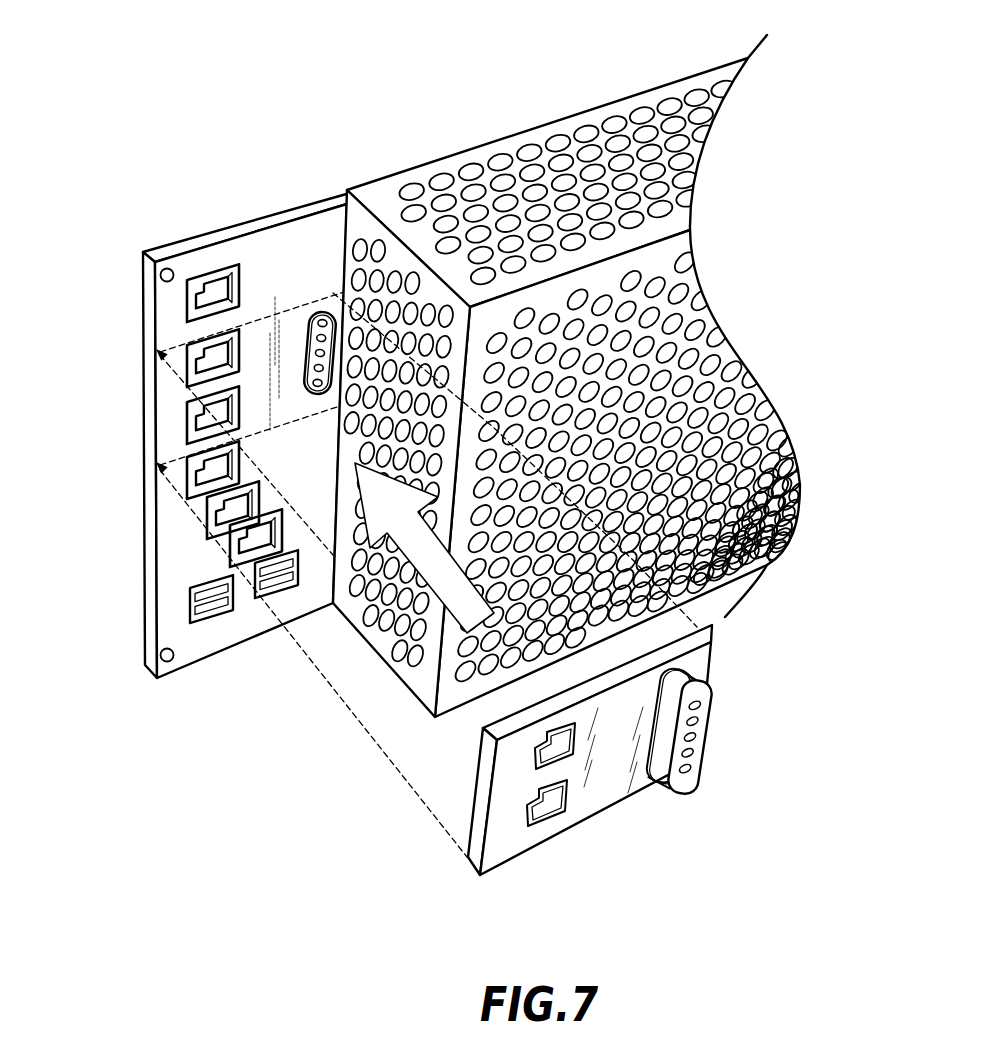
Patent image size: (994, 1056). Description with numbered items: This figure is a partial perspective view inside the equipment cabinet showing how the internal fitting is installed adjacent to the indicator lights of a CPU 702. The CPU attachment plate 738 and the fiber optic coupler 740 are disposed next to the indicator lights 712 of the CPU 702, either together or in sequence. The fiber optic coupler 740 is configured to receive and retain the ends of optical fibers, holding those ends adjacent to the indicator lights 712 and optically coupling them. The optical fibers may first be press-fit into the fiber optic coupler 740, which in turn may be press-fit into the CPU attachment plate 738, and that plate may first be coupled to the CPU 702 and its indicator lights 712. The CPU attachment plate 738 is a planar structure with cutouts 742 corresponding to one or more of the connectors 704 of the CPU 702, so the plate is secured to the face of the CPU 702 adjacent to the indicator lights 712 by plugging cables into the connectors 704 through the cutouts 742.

The CPU 702 is at (346, 168).
The connectors 704 is at (172, 388).
The indicator lights 712 is at (298, 360).
The CPU attachment plate 738 is at (700, 660).
The fiber optic coupler 740 is at (697, 760).
The cutouts 742 is at (553, 814).